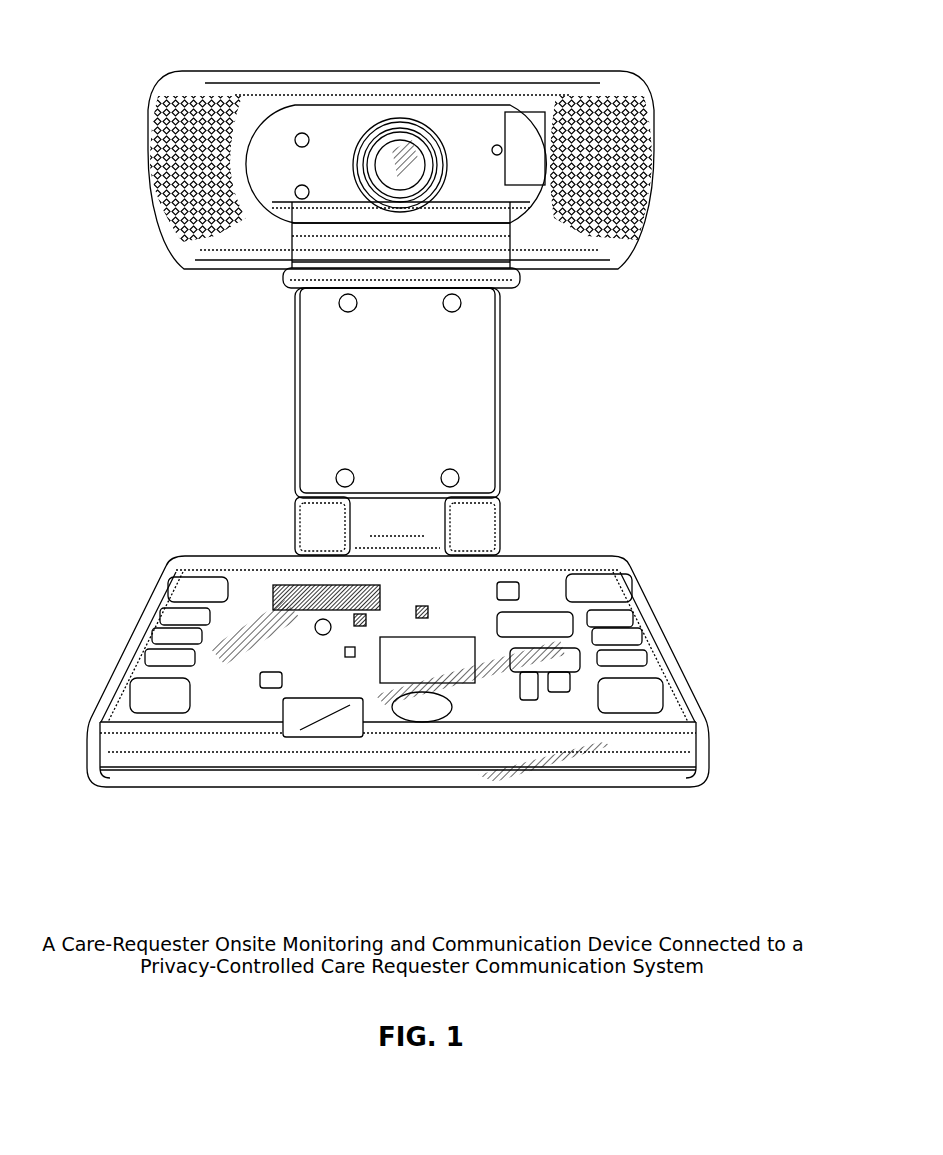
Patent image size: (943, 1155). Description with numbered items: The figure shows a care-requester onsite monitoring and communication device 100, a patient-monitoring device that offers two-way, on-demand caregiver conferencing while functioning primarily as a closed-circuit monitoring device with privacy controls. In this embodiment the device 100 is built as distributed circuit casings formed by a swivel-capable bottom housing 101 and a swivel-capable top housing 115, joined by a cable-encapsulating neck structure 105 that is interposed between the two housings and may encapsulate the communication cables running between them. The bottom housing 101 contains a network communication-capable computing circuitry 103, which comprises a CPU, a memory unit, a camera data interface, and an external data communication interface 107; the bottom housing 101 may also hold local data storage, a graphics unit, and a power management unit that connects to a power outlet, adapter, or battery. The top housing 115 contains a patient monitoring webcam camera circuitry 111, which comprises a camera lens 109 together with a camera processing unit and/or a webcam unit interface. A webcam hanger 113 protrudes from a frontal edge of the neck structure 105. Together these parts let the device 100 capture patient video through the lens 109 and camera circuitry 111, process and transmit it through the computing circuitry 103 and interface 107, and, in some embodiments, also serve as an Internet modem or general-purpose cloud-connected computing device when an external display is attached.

The care-requester onsite monitoring and communication device 100 is at (399, 894).
The swivel-capable bottom housing 101 is at (585, 773).
The network communication-capable computing circuitry 103 is at (440, 652).
The cable-encapsulating neck structure 105 is at (447, 423).
The external data communication interface 107 is at (302, 583).
The camera lens 109 is at (401, 163).
The patient monitoring webcam camera circuitry 111 is at (538, 148).
The webcam hanger 113 is at (470, 280).
The swivel-capable top housing 115 is at (272, 70).